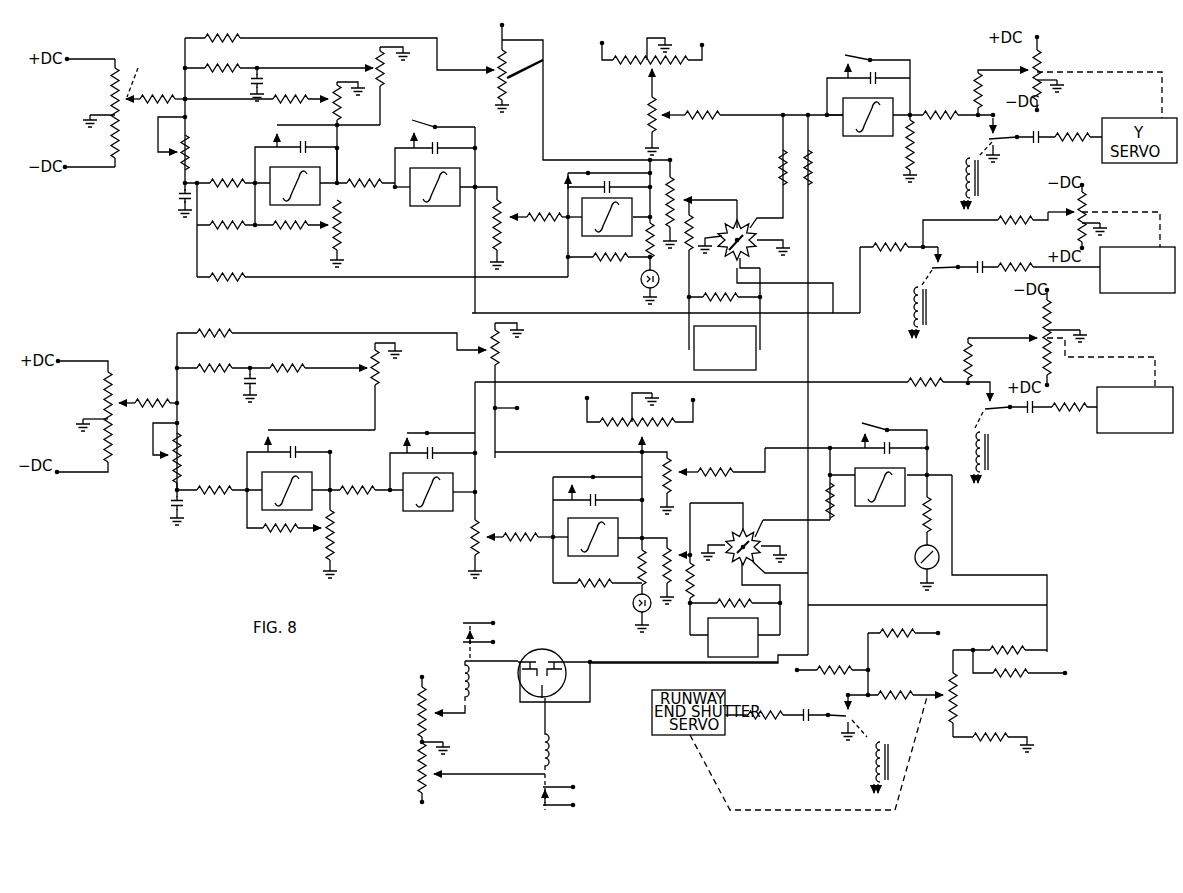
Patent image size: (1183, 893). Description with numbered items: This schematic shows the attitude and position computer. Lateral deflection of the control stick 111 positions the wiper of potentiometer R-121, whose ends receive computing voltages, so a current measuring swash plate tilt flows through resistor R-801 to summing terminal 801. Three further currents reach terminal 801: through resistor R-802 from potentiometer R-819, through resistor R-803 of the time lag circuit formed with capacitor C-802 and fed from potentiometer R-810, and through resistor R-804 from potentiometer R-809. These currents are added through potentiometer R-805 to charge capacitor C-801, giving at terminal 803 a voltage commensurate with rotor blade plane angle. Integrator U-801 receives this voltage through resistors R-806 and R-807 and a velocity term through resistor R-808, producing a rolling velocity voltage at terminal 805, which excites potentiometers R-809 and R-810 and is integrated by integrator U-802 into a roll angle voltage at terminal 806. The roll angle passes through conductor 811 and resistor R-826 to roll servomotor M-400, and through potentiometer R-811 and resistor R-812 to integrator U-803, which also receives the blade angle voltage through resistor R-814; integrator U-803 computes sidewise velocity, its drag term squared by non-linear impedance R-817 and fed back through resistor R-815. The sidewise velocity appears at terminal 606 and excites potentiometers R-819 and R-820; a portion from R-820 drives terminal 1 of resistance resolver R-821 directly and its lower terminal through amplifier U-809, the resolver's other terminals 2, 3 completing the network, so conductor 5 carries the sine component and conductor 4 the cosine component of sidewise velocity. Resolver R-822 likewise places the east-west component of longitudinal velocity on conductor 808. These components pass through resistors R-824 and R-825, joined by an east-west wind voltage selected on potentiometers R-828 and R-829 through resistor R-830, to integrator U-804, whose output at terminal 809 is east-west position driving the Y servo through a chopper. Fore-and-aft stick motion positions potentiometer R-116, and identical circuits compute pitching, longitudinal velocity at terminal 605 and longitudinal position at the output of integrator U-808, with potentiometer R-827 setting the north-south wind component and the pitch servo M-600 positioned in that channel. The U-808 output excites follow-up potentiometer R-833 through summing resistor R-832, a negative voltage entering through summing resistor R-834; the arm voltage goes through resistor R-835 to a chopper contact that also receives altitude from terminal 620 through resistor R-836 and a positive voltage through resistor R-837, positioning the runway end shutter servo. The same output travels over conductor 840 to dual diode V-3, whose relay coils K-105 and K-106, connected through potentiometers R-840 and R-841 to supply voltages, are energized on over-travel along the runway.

The control stick 111 is at (147, 74).
The potentiometer R-121 is at (93, 113).
The resistor R-801 is at (155, 107).
The terminal 801 is at (188, 101).
The resistor R-802 is at (339, 43).
The resistor R-803 is at (279, 60).
The capacitor C-802 is at (238, 83).
The resistor R-804 is at (256, 92).
The potentiometer R-809 is at (326, 132).
The potentiometer R-810 is at (404, 86).
The potentiometer R-805 is at (187, 144).
The terminal 803 is at (188, 183).
The capacitor C-801 is at (179, 196).
The resistor R-806 is at (227, 194).
The integrator U-801 is at (297, 182).
The terminal 805 is at (340, 188).
The resistor R-807 is at (226, 234).
The resistor R-808 is at (291, 234).
The resistor R-814 is at (382, 267).
The integrator U-802 is at (445, 173).
The terminal 806 is at (477, 185).
The conductor 811 is at (472, 244).
The potentiometer R-811 is at (499, 233).
The resistor R-812 is at (546, 208).
The integrator U-803 is at (611, 218).
The resistor R-815 is at (609, 266).
The non-linear impedance R-817 is at (641, 287).
The terminal 606 is at (520, 34).
The potentiometer R-819 is at (583, 101).
The potentiometer R-828 is at (656, 69).
The potentiometer R-829 is at (650, 132).
The resistor R-830 is at (752, 106).
The potentiometer R-820 is at (700, 204).
The resistance resolver R-821 is at (723, 275).
The upper terminal 1 is at (743, 213).
The potentiometer terminal 2 is at (710, 240).
The potentiometer terminal 3 is at (773, 239).
The conductor 4 is at (766, 171).
The conductor 5 is at (736, 267).
The resistor R-824 is at (786, 188).
The resistor R-825 is at (811, 168).
The conductor 808 is at (806, 348).
The amplifier U-809 is at (725, 348).
The resistor R-826 is at (906, 238).
The integrator U-804 is at (869, 105).
The terminal 809 is at (912, 113).
The roll servomotor M-400 is at (1137, 271).
The pitch servo M-600 is at (1135, 411).
The potentiometer R-116 is at (104, 391).
The terminal 605 is at (517, 419).
The potentiometer R-827 is at (698, 442).
The resolver R-822 is at (772, 498).
The integrator U-808 is at (889, 506).
The conductor 840 is at (987, 575).
The terminal 620 is at (944, 624).
The resistor R-836 is at (903, 662).
The resistor R-837 is at (821, 671).
The resistor R-835 is at (894, 687).
The follow-up potentiometer R-833 is at (978, 692).
The summing resistor R-832 is at (1010, 642).
The summing resistor R-834 is at (1040, 673).
The dual diode vacuum tube V-3 is at (621, 677).
The relay coil K-105 is at (470, 686).
The relay coil K-106 is at (548, 745).
The potentiometer R-840 is at (407, 710).
The potentiometer R-841 is at (395, 780).